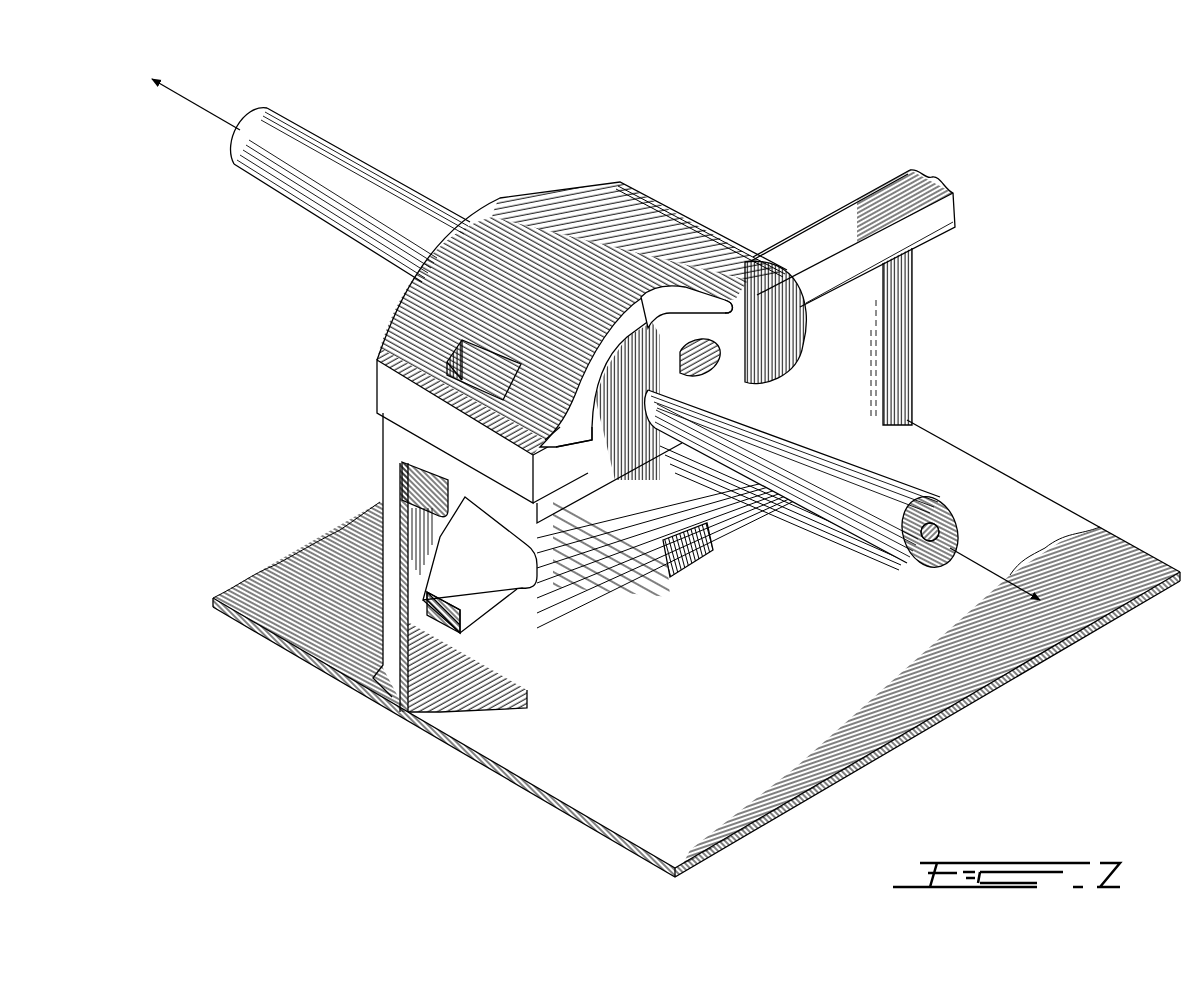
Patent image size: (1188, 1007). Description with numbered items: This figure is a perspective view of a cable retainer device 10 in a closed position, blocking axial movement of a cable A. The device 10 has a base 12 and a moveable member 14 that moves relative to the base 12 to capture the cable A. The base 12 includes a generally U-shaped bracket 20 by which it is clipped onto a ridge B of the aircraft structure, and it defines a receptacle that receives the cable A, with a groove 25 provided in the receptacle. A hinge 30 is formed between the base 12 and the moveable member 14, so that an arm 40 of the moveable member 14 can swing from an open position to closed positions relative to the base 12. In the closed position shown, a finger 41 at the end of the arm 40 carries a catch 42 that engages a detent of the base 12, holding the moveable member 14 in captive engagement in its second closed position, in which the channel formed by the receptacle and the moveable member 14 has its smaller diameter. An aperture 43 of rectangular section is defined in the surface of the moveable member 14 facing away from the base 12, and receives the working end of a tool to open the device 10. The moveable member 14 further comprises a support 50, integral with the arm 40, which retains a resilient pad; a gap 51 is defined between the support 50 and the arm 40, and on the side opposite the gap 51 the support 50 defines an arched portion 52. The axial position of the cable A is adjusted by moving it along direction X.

The cable retainer device 10 is at (720, 218).
The base 12 is at (378, 630).
The moveable member 14 is at (576, 186).
The U-shaped bracket 20 is at (385, 500).
The groove 25 is at (655, 392).
The hinge 30 is at (822, 313).
The arm 40 is at (645, 297).
The finger 41 is at (605, 432).
The catch 42 is at (578, 458).
The aperture 43 is at (450, 363).
The support 50 is at (683, 337).
The gap 51 is at (713, 306).
The arched portion 52 is at (705, 384).
The cable A is at (365, 190).
The ridge B is at (862, 350).
The direction X is at (990, 565).